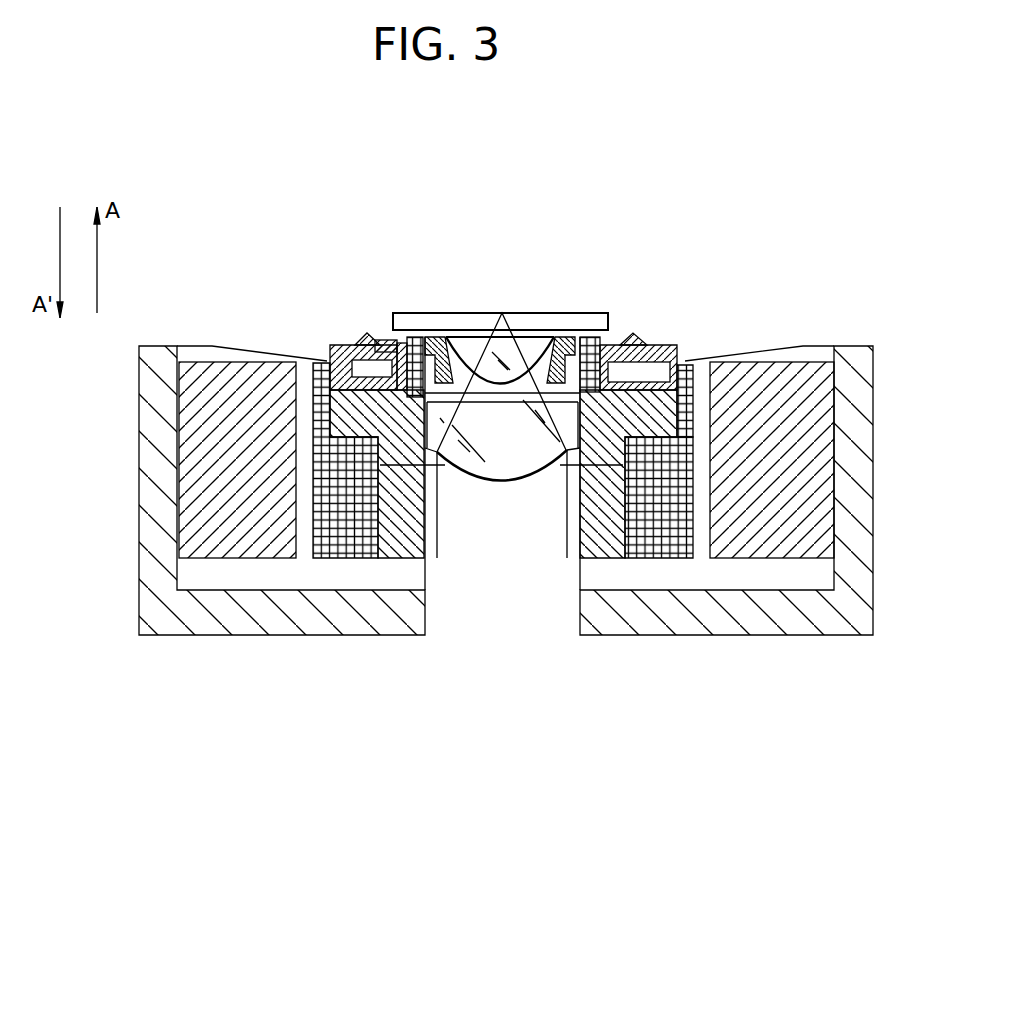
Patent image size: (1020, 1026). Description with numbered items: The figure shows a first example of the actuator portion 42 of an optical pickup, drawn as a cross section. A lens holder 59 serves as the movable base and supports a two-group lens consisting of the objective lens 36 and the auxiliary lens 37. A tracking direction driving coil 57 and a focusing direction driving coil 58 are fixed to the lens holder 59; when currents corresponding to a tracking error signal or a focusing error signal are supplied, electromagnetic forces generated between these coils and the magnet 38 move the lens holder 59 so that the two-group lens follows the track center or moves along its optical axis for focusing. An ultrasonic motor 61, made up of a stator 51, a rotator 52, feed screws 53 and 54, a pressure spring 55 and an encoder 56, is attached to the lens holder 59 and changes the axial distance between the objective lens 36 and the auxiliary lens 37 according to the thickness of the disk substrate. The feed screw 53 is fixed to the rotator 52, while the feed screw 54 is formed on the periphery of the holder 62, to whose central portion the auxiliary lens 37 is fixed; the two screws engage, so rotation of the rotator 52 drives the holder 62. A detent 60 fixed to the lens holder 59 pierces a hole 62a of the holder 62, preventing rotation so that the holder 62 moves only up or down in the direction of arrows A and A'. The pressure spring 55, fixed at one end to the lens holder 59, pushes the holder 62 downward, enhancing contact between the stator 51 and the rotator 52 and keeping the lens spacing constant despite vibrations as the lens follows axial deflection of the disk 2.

The disk 2 is at (558, 320).
The objective lens 36 is at (498, 458).
The auxiliary lens 37 is at (532, 350).
The magnet 38 is at (245, 537).
The actuator portion 42 is at (542, 762).
The stator 51 is at (400, 370).
The rotator 52 is at (405, 358).
The feed screw 53 is at (333, 345).
The feed screw 54 is at (385, 343).
The pressure spring 55 is at (358, 365).
The encoder 56 is at (330, 358).
The tracking direction driving coil 57 is at (684, 362).
The focusing direction driving coil 58 is at (665, 522).
The lens holder 59 is at (607, 453).
The detent 60 is at (617, 350).
The ultrasonic motor 61 is at (367, 251).
The holder 62 is at (437, 340).
The hole 62a is at (577, 345).